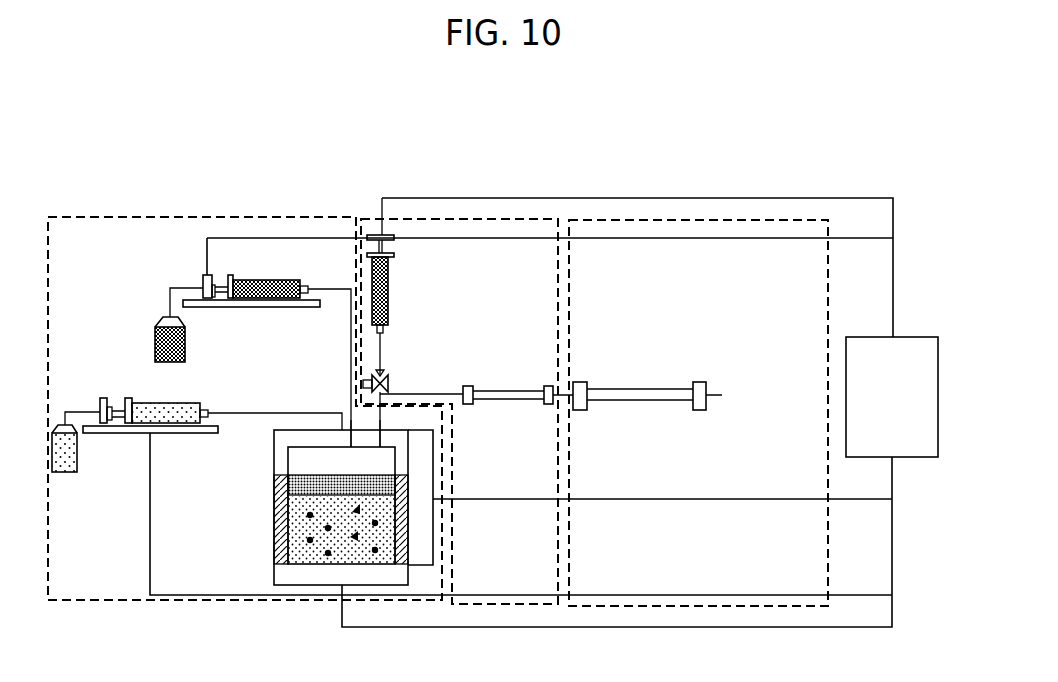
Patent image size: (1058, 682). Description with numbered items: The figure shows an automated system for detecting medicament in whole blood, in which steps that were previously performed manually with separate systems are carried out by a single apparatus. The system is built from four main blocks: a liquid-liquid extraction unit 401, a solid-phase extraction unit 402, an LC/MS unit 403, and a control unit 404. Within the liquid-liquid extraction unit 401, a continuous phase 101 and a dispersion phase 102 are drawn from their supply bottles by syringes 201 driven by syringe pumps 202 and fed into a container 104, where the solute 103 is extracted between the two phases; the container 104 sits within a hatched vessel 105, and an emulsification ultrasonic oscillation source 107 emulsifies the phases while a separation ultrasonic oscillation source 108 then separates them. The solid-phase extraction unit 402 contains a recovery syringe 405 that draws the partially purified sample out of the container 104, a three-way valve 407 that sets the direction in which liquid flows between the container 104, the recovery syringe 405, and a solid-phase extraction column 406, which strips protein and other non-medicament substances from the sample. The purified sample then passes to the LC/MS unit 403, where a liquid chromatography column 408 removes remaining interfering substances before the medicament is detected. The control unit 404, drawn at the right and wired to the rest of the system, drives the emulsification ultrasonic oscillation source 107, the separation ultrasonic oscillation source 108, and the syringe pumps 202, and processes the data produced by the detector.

The continuous phase 101 is at (70, 472).
The dispersion phase 102 is at (155, 325).
The solute 103 is at (305, 540).
The container 104 is at (313, 447).
The reaction vessel 105 is at (407, 520).
The emulsification ultrasonic oscillation source 107 is at (273, 572).
The separation ultrasonic oscillation source 108 is at (435, 473).
The syringes 201 is at (285, 261).
The syringe pumps 202 is at (257, 308).
The liquid-liquid extraction unit 401 is at (117, 216).
The solid-phase extraction unit 402 is at (500, 218).
The LC/MS unit 403 is at (688, 220).
The control unit 404 is at (865, 337).
The recovery syringe 405 is at (372, 233).
The solid-phase extraction column 406 is at (505, 391).
The three-way valve 407 is at (388, 381).
The liquid chromatography column 408 is at (755, 366).